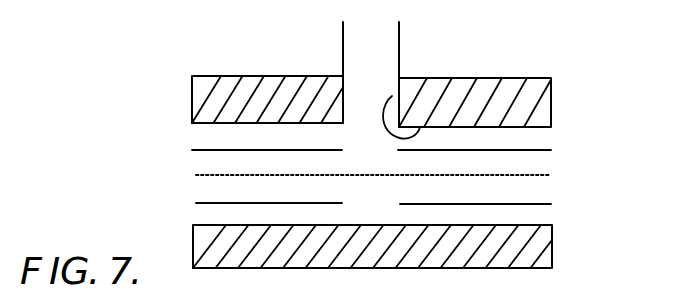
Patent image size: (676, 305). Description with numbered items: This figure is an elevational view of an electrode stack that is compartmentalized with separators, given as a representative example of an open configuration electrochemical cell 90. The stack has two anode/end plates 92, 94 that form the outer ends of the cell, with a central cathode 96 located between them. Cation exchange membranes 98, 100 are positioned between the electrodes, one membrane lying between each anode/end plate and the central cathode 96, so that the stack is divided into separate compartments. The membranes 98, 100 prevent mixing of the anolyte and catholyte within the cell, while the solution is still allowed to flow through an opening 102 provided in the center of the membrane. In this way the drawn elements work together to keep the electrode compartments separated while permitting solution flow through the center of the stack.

The open configuration electrochemical cell 90 is at (152, 168).
The anode/end plate 92 is at (552, 110).
The anode/end plate 94 is at (553, 253).
The central cathode 96 is at (546, 176).
The cation exchange membrane 98 is at (200, 150).
The cation exchange membrane 100 is at (200, 203).
The opening 102 is at (420, 127).